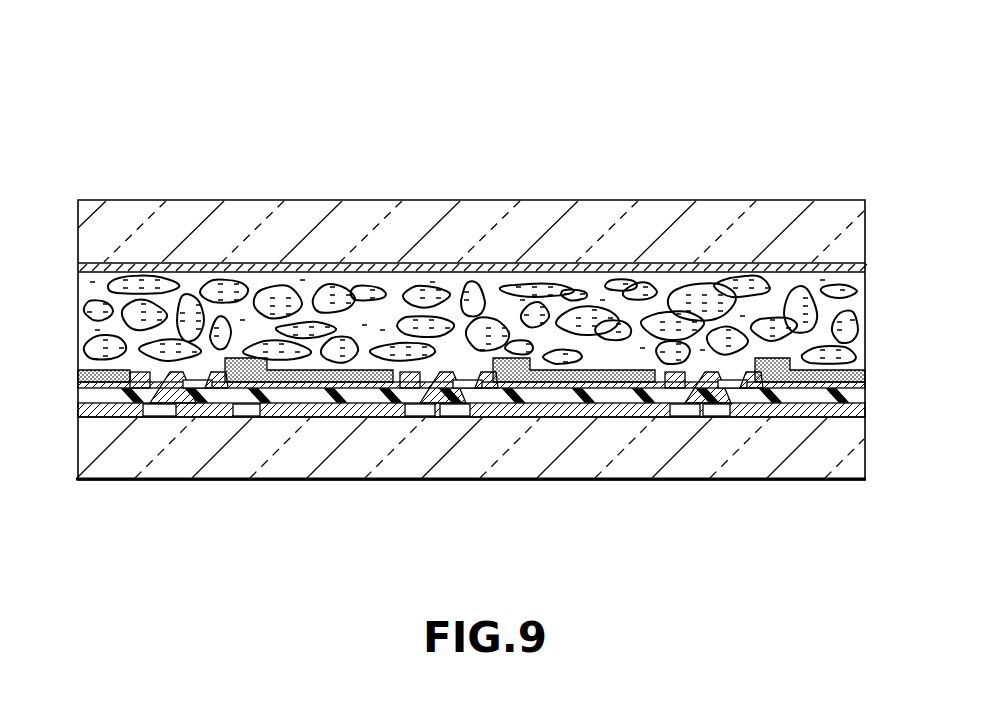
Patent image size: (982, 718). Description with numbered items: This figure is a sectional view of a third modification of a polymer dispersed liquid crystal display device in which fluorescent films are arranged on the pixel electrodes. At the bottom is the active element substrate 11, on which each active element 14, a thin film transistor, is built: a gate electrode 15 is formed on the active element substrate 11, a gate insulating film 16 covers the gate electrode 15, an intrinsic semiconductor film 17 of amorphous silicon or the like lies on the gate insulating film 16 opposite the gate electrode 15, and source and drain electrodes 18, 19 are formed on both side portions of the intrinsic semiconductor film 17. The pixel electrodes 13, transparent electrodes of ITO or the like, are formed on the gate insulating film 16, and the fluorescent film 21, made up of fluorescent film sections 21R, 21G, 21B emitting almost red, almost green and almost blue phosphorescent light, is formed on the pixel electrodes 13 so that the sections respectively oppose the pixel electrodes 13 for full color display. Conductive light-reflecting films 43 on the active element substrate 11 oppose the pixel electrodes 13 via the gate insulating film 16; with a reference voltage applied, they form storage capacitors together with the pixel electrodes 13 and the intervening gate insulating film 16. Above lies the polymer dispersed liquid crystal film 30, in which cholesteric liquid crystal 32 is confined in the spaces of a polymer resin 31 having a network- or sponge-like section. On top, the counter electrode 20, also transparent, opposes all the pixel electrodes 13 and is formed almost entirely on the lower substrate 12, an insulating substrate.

The active element substrate 11 is at (764, 455).
The lower substrate 12 is at (763, 228).
The pixel electrodes 13 is at (253, 394).
The active element 14 is at (187, 425).
The gate electrode 15 is at (197, 416).
The gate insulating film 16 is at (690, 392).
The intrinsic semiconductor film 17 is at (175, 380).
The source electrode 18 is at (223, 392).
The drain electrode 19 is at (140, 398).
The counter electrode 20 is at (573, 262).
The fluorescent film 21 is at (471, 204).
The fluorescent film section 21R is at (380, 377).
The fluorescent film section 21G is at (556, 377).
The fluorescent film section 21B is at (797, 372).
The polymer dispersed liquid crystal film 30 is at (70, 283).
The polymer resin 31 is at (195, 280).
The cholesteric liquid crystal 32 is at (360, 298).
The conductive light-reflecting films 43 is at (362, 392).